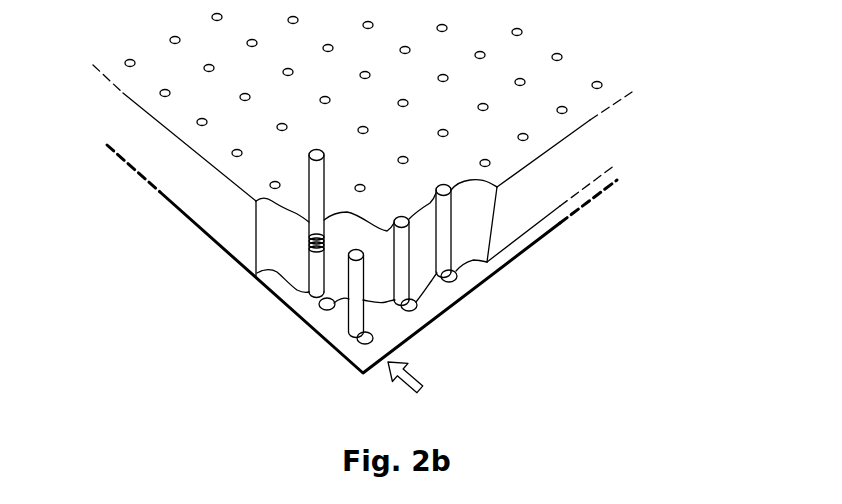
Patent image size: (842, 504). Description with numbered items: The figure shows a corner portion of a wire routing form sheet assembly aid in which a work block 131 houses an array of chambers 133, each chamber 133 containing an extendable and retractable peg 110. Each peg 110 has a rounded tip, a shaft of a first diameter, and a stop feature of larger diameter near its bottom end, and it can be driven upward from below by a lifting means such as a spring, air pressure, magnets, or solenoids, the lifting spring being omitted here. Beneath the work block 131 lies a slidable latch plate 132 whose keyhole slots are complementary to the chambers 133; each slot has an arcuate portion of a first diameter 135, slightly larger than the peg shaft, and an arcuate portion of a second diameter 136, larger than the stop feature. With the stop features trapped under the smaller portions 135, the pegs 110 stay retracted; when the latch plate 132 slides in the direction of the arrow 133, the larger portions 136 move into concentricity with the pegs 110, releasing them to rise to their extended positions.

The extendable and retractable pegs 110 is at (309, 192).
The work block 131 is at (210, 200).
The slidable latch plate 132 is at (283, 300).
The chambers 133 is at (414, 389).
The arcuate portion of a first diameter 135 is at (313, 298).
The arcuate portion of a second diameter 136 is at (328, 310).